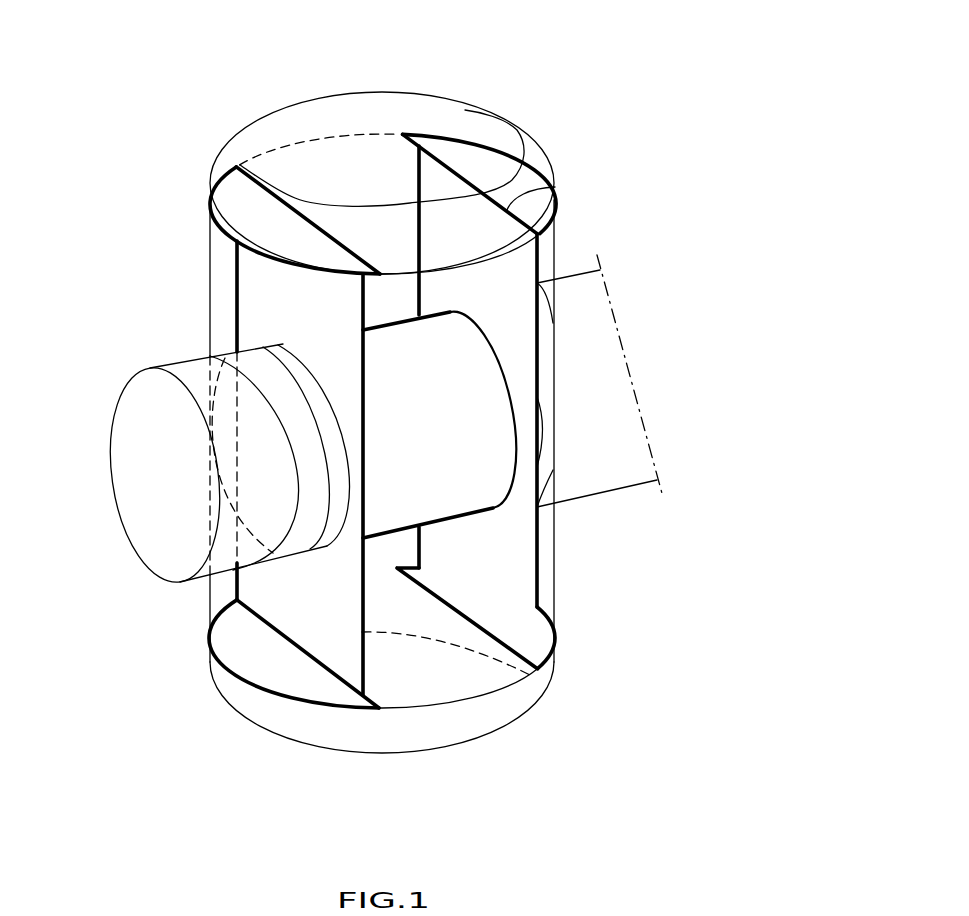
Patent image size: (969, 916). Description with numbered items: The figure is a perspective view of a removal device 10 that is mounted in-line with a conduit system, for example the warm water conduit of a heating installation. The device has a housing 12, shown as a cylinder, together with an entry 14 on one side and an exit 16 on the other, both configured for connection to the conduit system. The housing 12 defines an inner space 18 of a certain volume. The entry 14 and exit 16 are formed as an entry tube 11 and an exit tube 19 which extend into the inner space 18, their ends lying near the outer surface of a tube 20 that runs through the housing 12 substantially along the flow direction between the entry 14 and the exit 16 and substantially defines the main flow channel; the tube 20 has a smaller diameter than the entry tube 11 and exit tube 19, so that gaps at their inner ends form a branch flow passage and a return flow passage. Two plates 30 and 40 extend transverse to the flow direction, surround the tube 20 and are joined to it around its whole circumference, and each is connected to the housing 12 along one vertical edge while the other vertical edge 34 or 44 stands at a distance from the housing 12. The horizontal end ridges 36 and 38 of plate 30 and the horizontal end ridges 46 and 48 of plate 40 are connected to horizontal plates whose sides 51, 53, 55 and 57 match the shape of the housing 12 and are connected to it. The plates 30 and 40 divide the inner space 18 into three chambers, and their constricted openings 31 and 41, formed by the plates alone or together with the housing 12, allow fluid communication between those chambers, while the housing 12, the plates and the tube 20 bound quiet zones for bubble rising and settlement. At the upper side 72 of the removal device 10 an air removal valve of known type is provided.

The removal device 10 is at (547, 75).
The entry tube 11 is at (208, 577).
The housing 12 is at (208, 240).
The entry 14 is at (86, 444).
The exit 16 is at (670, 378).
The inner space 18 is at (418, 621).
The exit tube 19 is at (587, 497).
The tube 20 is at (537, 555).
The plate 30 is at (303, 623).
The constricted opening 31 is at (367, 573).
The vertical edge 34 is at (362, 660).
The horizontal end ridge 36 is at (297, 207).
The horizontal end ridge 38 is at (330, 623).
The plate 40 is at (487, 610).
The constricted opening 41 is at (410, 250).
The vertical edge 44 is at (417, 183).
The horizontal end ridge 46 is at (552, 187).
The horizontal end ridge 48 is at (460, 617).
The side of horizontal plate 51 is at (240, 304).
The side of horizontal plate 53 is at (247, 688).
The side of horizontal plate 55 is at (497, 111).
The side of horizontal plate 57 is at (540, 617).
The upper side 72 is at (440, 93).